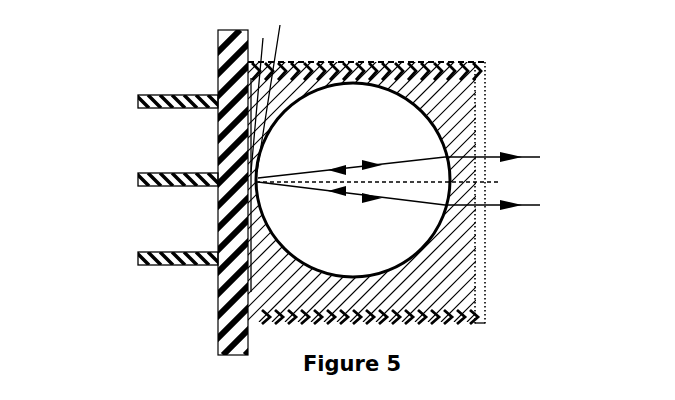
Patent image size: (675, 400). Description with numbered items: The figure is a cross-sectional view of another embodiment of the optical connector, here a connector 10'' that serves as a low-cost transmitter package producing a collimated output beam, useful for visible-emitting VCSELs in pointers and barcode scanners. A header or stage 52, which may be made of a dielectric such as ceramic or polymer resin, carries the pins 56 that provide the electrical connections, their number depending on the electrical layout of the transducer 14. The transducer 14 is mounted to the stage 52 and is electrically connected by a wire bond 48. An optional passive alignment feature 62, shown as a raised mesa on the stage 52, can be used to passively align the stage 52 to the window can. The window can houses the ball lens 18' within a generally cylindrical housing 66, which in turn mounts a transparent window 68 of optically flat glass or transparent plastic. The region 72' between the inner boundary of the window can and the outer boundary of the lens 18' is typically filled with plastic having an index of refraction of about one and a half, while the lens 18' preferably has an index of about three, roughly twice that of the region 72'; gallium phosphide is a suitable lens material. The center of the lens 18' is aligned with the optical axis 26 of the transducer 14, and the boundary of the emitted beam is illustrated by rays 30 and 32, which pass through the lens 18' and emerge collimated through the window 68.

The connector 10'' is at (255, 192).
The stage 52 is at (232, 50).
The alignment feature 62 is at (246, 83).
The transducer 14 is at (277, 95).
The lens 18' is at (353, 150).
The housing 66 is at (383, 68).
The transparent window 68 is at (483, 130).
The ray 32 is at (533, 152).
The optical axis 26 is at (500, 182).
The ray 30 is at (527, 203).
The region 72' is at (337, 191).
The wire bond 48 is at (268, 250).
The pins 56 is at (170, 110).